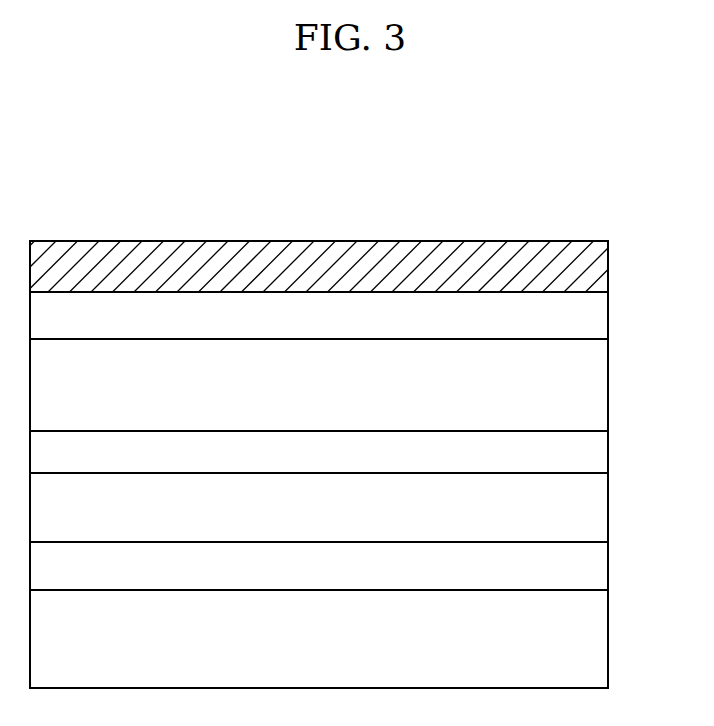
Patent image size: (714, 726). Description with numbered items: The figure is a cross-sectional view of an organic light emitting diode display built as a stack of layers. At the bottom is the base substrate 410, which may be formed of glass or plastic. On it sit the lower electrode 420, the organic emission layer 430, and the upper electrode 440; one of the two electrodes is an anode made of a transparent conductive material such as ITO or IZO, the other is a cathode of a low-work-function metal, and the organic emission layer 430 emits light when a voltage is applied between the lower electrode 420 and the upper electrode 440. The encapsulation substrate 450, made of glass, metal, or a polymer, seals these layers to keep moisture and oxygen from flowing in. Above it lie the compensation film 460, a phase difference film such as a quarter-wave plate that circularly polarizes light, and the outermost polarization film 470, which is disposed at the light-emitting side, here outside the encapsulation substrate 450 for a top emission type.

The base substrate 410 is at (608, 645).
The lower electrode 420 is at (608, 565).
The organic emission layer 430 is at (608, 509).
The upper electrode 440 is at (608, 450).
The encapsulation substrate 450 is at (608, 382).
The compensation film 460 is at (608, 314).
The polarization film 470 is at (608, 268).